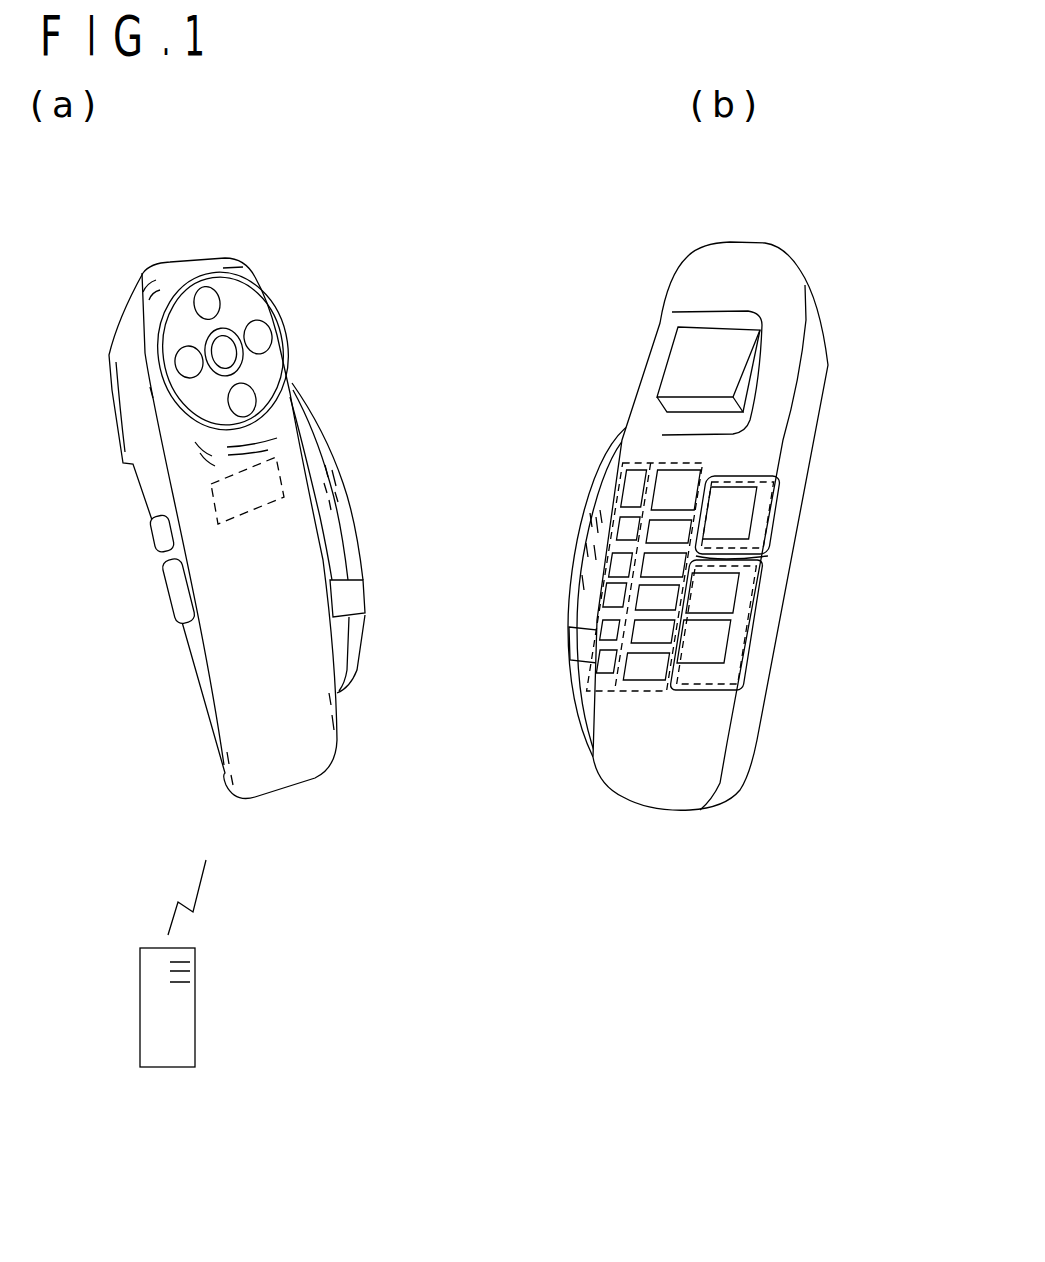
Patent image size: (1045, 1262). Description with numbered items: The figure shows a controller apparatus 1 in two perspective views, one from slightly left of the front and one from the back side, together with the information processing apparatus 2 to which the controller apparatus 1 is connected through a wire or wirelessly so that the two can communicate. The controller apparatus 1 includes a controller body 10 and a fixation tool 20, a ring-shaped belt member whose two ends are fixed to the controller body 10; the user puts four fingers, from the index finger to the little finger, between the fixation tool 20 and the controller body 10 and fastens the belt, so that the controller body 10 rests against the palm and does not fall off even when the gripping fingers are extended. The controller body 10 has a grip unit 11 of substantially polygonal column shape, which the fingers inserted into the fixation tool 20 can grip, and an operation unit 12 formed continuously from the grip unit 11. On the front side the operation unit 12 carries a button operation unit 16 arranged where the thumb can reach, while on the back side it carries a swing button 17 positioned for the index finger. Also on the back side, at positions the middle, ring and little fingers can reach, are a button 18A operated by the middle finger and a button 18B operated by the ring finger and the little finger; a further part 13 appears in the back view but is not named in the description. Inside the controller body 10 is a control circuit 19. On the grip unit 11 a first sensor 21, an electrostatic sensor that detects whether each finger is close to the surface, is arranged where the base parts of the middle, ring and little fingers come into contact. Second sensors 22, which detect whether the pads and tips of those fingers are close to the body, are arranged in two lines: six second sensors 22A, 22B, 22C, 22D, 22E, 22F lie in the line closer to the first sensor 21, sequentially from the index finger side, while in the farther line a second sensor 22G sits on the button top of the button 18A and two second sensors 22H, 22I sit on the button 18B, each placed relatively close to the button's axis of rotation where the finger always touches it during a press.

The controller apparatus 1 is at (322, 815).
The information processing apparatus 2 is at (167, 1068).
The controller body 10 is at (489, 548).
The grip unit 11 is at (185, 685).
The operation unit 12 is at (323, 327).
The rear housing 13 is at (710, 526).
The button operation unit 16 is at (205, 298).
The swing button 17 is at (698, 374).
The button operated by the middle finger 18A is at (160, 537).
The button operated by the ring finger and the little finger 18B is at (175, 585).
The control circuit 19 is at (247, 490).
The fixation tool 20 is at (343, 550).
The first sensor 21 is at (593, 674).
The second sensor 22 is at (663, 651).
The second sensor 22A is at (675, 490).
The second sensor 22B is at (669, 532).
The second sensor 22C is at (663, 565).
The second sensor 22D is at (657, 598).
The second sensor 22E is at (653, 632).
The second sensor 22F is at (646, 666).
The second sensor 22G is at (736, 517).
The second sensor 22H is at (717, 625).
The second sensor 22I is at (704, 641).